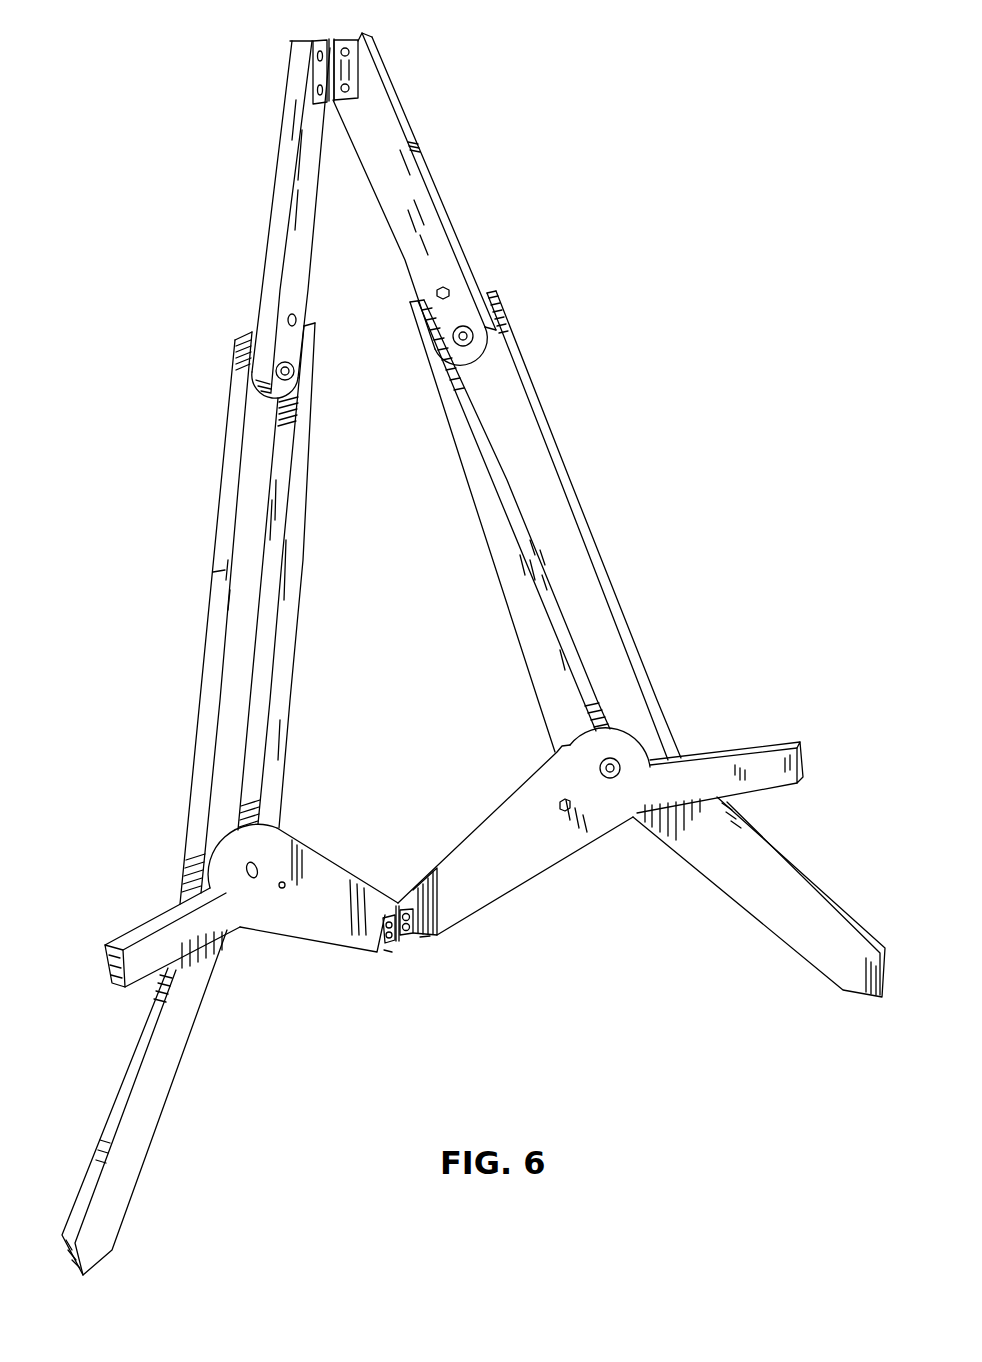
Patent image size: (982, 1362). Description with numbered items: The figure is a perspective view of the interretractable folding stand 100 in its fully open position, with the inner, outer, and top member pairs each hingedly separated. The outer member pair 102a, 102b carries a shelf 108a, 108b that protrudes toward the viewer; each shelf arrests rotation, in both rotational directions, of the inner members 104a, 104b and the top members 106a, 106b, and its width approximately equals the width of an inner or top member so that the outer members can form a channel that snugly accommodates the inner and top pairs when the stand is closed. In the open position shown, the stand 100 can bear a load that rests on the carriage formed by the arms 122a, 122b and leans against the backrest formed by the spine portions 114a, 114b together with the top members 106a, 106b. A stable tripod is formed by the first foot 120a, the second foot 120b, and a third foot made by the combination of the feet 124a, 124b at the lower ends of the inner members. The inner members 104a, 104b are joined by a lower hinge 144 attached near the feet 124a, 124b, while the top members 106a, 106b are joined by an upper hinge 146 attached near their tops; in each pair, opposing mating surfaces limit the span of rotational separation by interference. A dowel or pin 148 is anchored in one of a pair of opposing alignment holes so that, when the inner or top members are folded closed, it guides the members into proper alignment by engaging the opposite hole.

The interretractable folding stand 100 is at (620, 189).
The outer member 102a is at (215, 627).
The outer member 102b is at (580, 548).
The inner member 104a is at (317, 943).
The inner member 104b is at (535, 873).
The top member 106a is at (282, 192).
The top member 106b is at (445, 213).
The shelf 108a is at (285, 648).
The shelf 108b is at (545, 687).
The spine portion 114a is at (217, 481).
The spine portion 114b is at (570, 454).
The first foot 120a is at (100, 1277).
The second foot 120b is at (857, 995).
The arm 122a is at (135, 927).
The arm 122b is at (724, 752).
The foot 124a is at (391, 955).
The foot 124b is at (424, 941).
The lower hinge 144 is at (398, 900).
The upper hinge 146 is at (348, 70).
The dowel or pin 148 is at (436, 294).